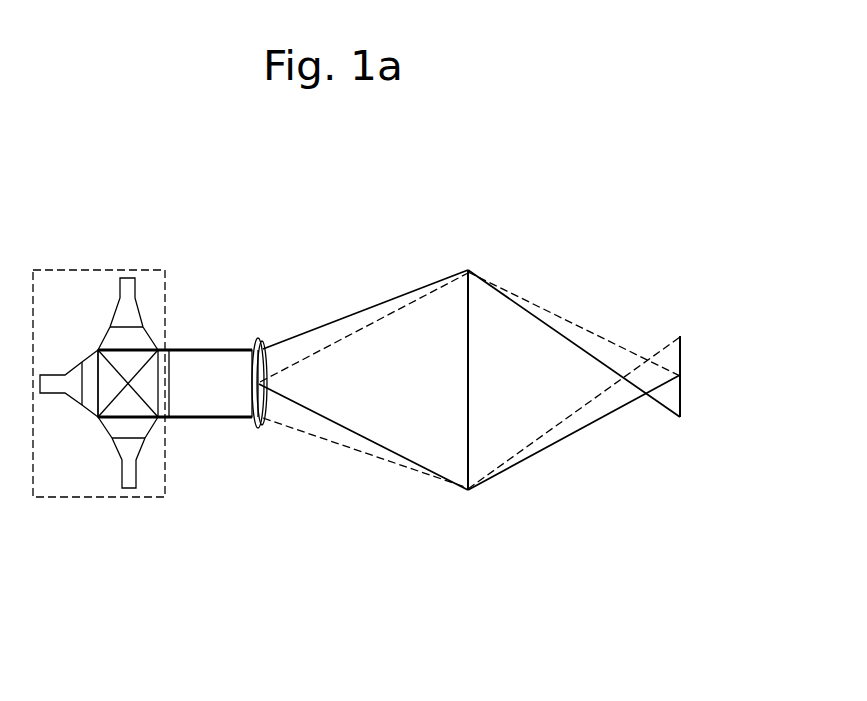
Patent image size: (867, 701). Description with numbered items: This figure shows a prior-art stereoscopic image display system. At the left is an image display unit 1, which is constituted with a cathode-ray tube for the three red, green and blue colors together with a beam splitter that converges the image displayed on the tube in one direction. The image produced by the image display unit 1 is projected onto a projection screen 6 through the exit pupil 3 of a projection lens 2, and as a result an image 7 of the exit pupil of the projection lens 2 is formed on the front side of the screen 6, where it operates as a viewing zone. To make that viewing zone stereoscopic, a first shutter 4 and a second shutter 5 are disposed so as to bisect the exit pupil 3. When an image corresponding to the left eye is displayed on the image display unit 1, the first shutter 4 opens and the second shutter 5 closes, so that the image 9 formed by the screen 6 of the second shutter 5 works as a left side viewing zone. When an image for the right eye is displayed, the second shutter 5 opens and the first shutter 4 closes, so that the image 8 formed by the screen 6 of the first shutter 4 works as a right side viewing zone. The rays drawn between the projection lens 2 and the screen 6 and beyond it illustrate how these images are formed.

The image display unit 1 is at (98, 270).
The projection lens 2 is at (215, 365).
The exit pupil 3 is at (255, 342).
The first shutter 4 is at (262, 365).
The second shutter 5 is at (262, 410).
The projection screen 6 is at (467, 369).
The image of the exit pupil 7 is at (680, 365).
The image of the first shutter 8 is at (683, 352).
The image of the second shutter 9 is at (683, 396).